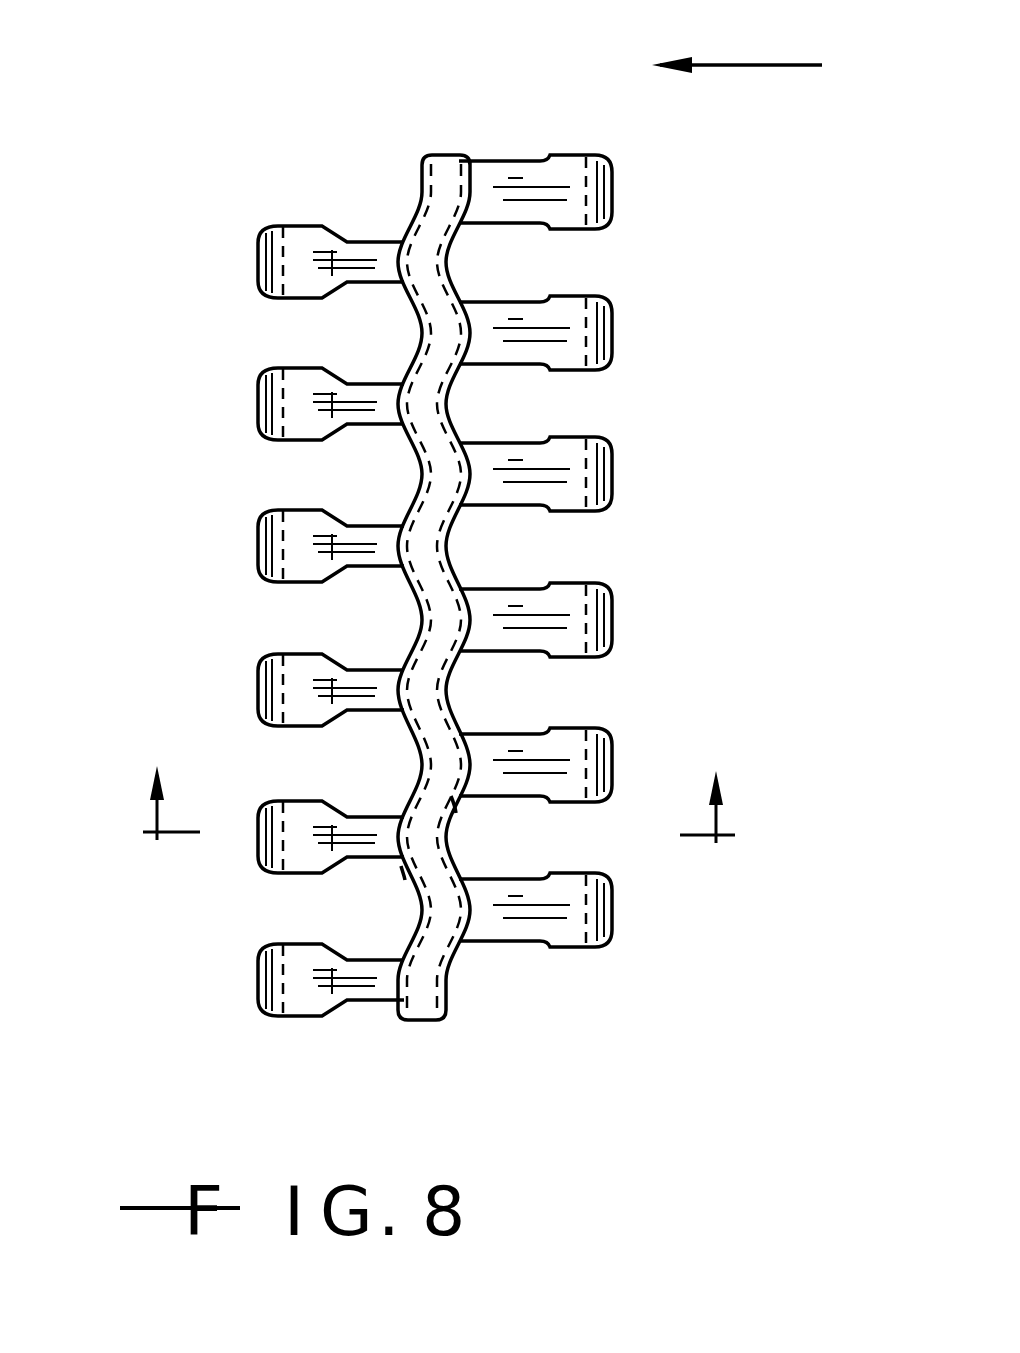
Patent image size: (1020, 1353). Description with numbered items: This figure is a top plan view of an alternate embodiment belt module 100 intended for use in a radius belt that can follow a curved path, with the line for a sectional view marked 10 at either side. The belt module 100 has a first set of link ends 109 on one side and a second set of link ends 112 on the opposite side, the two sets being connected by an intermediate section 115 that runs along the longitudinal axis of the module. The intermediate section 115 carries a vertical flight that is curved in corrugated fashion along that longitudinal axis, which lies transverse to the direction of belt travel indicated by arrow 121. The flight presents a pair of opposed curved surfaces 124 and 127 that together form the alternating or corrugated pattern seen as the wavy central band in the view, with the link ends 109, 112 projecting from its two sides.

The belt module 100 is at (460, 118).
The intermediate section 115 is at (424, 262).
The first set of link ends 109 is at (268, 408).
The second set of link ends 112 is at (607, 333).
The arrow 121 is at (745, 65).
The curved surface 124 is at (403, 870).
The curved surface 127 is at (453, 806).
The section line 10- 10 is at (441, 783).